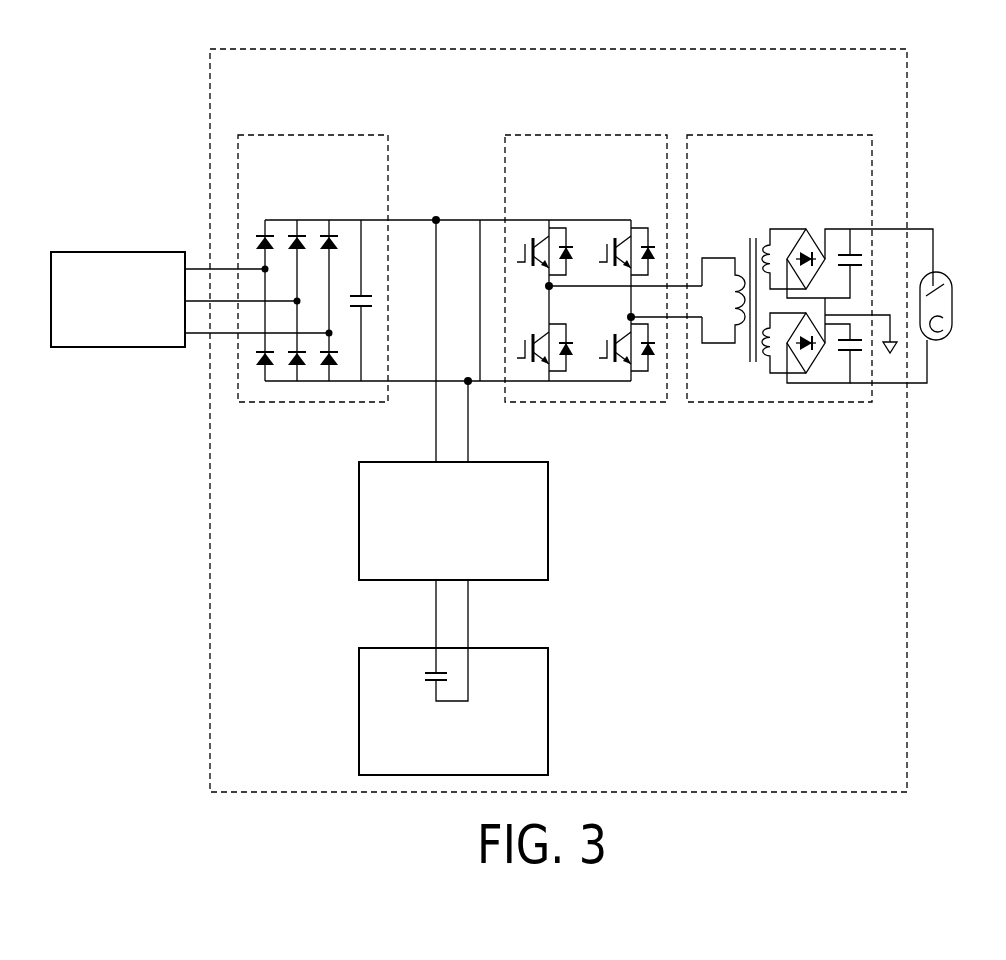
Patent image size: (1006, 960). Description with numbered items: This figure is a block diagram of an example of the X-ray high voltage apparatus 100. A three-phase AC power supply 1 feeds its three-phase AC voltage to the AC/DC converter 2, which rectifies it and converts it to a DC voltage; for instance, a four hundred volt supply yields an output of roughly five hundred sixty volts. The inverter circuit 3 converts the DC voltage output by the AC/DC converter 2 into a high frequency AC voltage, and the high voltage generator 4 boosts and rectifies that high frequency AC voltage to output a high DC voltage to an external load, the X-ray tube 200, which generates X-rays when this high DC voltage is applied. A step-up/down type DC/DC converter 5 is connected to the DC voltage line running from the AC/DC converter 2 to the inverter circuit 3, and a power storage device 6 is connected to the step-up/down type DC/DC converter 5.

The X-ray high voltage apparatus 100 is at (848, 49).
The three-phase AC power supply 1 is at (163, 252).
The AC/DC converter 2 is at (366, 135).
The inverter circuit 3 is at (647, 135).
The high voltage generator 4 is at (850, 135).
The step-up/down type DC/DC converter 5 is at (525, 462).
The power storage device 6 is at (525, 648).
The X-ray tube 200 is at (942, 272).